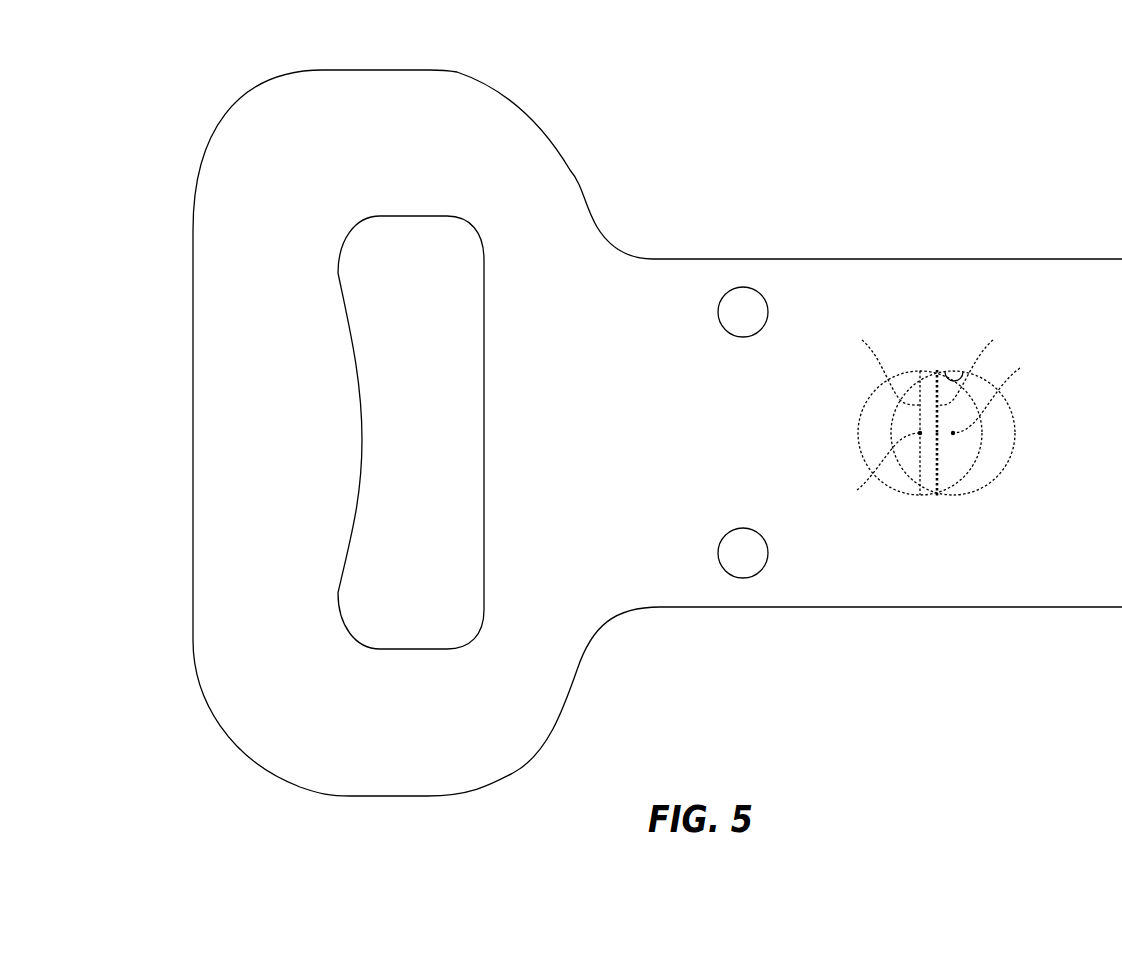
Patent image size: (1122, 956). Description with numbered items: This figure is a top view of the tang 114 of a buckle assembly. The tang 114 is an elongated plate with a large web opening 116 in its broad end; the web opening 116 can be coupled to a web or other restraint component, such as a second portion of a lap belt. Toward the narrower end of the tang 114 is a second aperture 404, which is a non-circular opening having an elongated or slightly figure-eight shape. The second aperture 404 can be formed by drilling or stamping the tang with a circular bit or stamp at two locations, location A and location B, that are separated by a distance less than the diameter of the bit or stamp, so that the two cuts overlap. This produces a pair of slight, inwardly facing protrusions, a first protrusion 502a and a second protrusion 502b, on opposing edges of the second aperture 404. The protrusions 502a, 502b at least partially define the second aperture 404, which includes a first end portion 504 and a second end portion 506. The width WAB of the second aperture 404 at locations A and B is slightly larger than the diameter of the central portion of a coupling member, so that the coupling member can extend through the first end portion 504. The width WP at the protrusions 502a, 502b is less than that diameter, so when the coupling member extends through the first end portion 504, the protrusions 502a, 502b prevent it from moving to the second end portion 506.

The tang 114 is at (410, 86).
The web opening 116 is at (490, 420).
The second aperture 404 is at (963, 372).
The first protrusion 502a is at (937, 370).
The second protrusion 502b is at (937, 496).
The first end portion 504 is at (857, 433).
The second end portion 506 is at (1016, 433).
The location A is at (880, 468).
The location B is at (993, 397).
The width of the second aperture at locations A and B WAB is at (864, 364).
The width at the protrusions WP is at (982, 364).